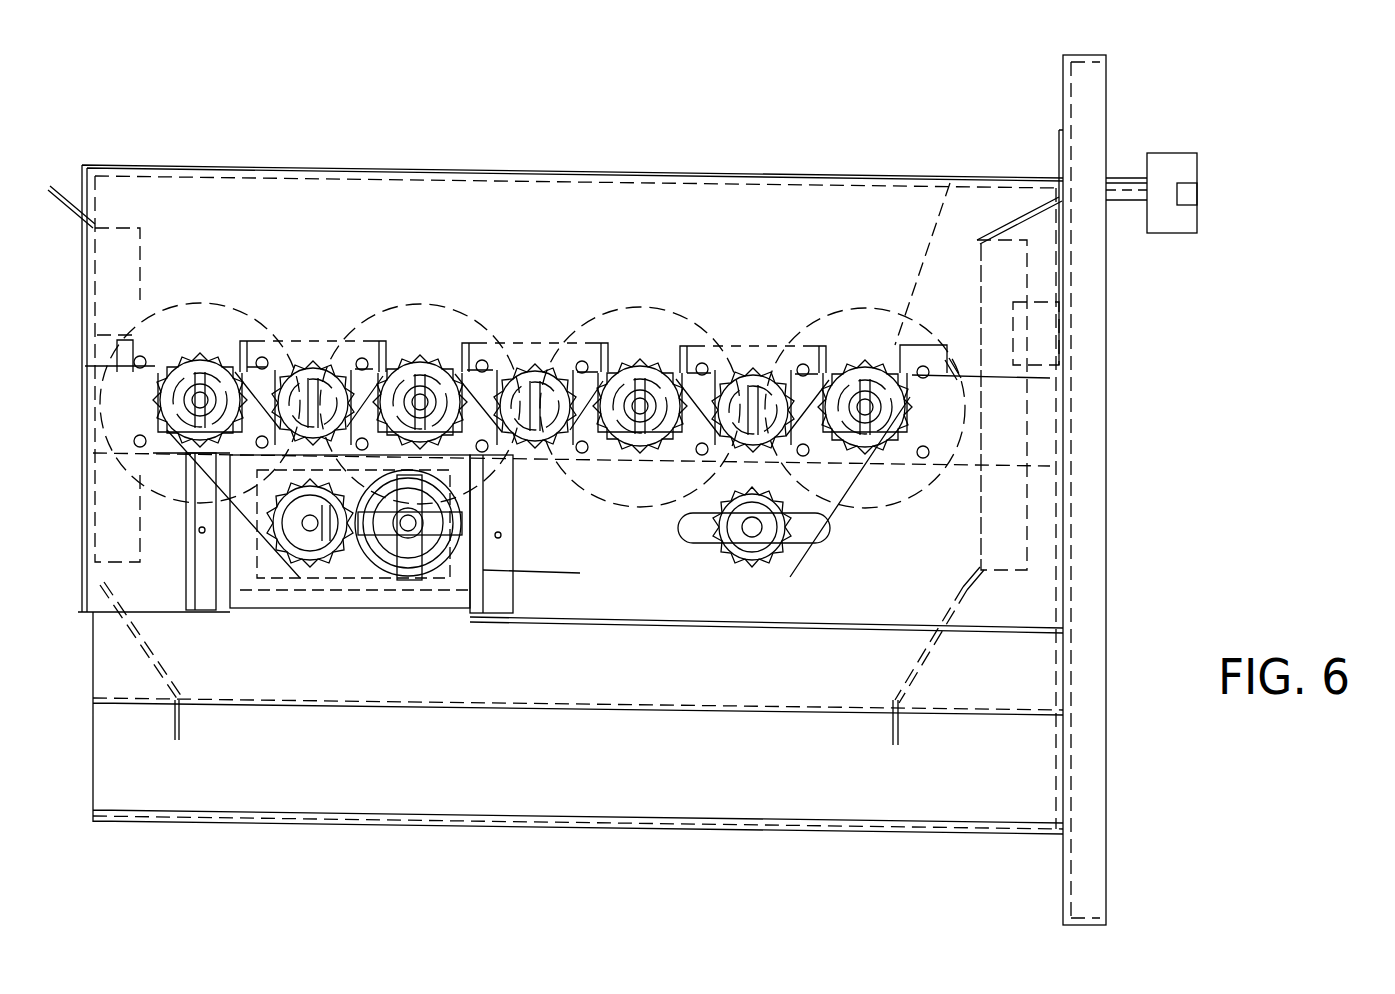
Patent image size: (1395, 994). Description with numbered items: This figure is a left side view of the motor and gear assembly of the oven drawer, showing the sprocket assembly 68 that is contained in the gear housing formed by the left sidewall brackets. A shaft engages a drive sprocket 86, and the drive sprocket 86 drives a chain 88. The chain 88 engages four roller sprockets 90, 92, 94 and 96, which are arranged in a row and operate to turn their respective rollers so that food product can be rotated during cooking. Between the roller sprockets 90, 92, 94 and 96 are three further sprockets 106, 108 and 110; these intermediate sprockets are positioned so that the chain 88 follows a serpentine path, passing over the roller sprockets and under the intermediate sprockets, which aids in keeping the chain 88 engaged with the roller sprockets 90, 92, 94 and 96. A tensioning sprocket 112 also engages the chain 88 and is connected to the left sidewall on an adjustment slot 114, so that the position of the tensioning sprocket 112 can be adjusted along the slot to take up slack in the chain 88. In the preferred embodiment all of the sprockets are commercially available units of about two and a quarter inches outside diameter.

The sprocket assembly 68 is at (268, 255).
The drive sprocket 86 is at (300, 578).
The chain 88 is at (243, 525).
The sprocket 90 is at (190, 303).
The sprocket 92 is at (452, 320).
The sprocket 94 is at (632, 308).
The sprocket 96 is at (830, 320).
The sprocket 106 is at (313, 362).
The sprocket 108 is at (526, 365).
The sprocket 110 is at (763, 370).
The tensioning sprocket 112 is at (790, 545).
The adjustment slot 114 is at (700, 535).